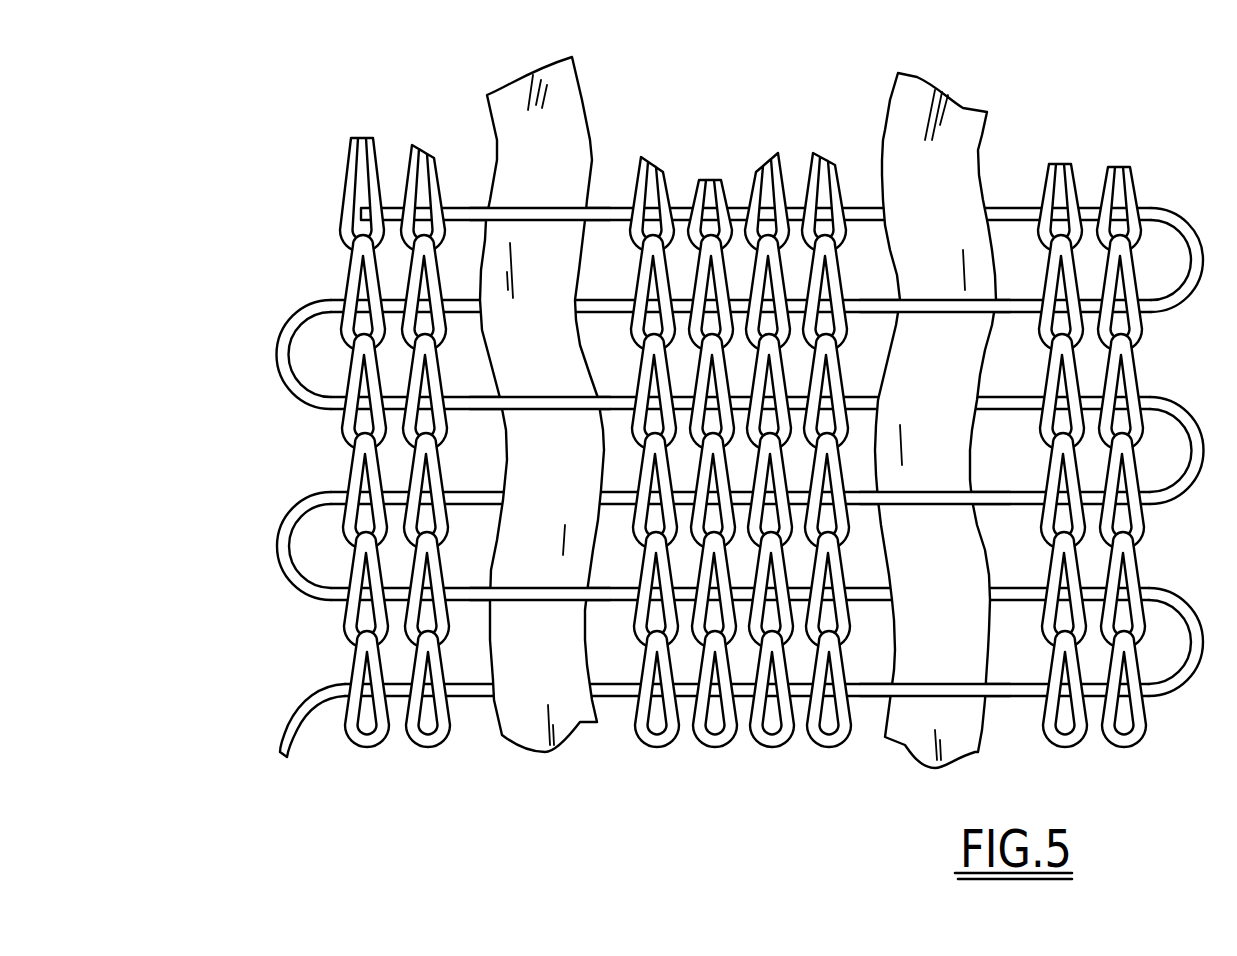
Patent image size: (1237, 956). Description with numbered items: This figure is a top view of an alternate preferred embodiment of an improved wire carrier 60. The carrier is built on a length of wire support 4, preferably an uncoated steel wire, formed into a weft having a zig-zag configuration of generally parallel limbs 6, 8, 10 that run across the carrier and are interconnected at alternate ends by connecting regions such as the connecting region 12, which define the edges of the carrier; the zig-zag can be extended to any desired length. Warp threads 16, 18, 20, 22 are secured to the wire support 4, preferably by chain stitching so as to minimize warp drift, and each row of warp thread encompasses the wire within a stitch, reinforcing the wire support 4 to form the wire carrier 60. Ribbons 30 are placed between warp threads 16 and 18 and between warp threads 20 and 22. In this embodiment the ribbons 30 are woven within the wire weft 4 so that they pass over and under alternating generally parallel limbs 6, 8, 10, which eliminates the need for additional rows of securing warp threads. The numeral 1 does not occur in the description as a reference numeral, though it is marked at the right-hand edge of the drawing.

The wire carrier 60 is at (348, 129).
The ribbons 30 is at (578, 100).
The wire support 4 is at (682, 207).
The connecting region 12 is at (283, 548).
The limb 10 is at (1024, 508).
The limb 8 is at (1024, 597).
The limb 6 is at (1019, 699).
The weft yarn turn 1 is at (1205, 645).
The warp thread 16 is at (410, 745).
The warp thread 18 is at (710, 746).
The warp thread 20 is at (768, 746).
The warp thread 22 is at (1120, 747).